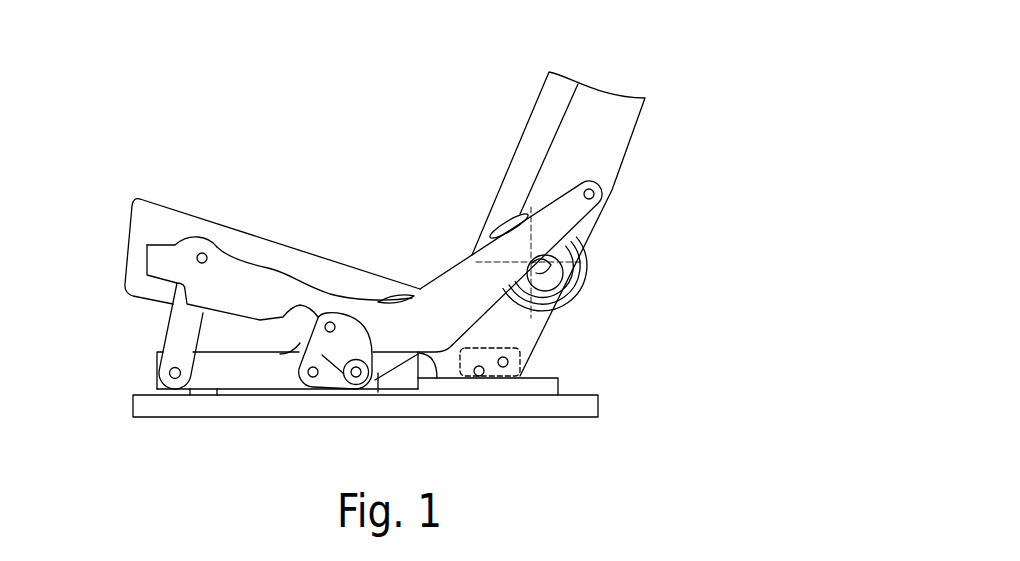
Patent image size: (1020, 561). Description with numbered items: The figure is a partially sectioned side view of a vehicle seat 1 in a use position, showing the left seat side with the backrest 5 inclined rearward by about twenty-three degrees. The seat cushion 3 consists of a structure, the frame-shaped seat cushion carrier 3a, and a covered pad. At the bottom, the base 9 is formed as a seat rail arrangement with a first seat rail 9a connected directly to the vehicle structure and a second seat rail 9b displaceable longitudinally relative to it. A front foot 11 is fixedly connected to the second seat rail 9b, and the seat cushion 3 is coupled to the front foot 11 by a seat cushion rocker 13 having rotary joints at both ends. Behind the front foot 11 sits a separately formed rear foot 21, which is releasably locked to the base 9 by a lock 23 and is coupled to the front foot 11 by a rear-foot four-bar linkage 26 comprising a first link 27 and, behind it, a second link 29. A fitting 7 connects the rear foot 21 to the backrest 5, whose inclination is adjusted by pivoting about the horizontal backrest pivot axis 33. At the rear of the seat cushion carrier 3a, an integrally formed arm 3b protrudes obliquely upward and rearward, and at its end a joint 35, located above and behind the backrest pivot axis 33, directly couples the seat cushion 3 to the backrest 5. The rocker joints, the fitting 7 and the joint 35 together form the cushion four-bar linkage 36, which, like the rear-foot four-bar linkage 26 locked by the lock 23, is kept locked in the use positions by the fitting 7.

The vehicle seat 1 is at (404, 182).
The seat cushion 3 is at (184, 200).
The seat cushion carrier 3a is at (232, 290).
The arm 3b is at (515, 248).
The backrest 5 is at (600, 117).
The fitting 7 is at (565, 272).
The base 9 is at (118, 387).
The first seat rail 9a is at (177, 407).
The second seat rail 9b is at (217, 394).
The front foot 11 is at (280, 380).
The seat cushion rocker 13 is at (182, 343).
The rear foot 21 is at (536, 324).
The lock 23 is at (527, 357).
The rear-foot four-bar linkage 26 is at (315, 331).
The first link 27 is at (342, 376).
The second link 29 is at (380, 362).
The backrest pivot axis 33 is at (557, 261).
The joint 35 is at (594, 194).
The cushion four-bar linkage 36 is at (591, 230).